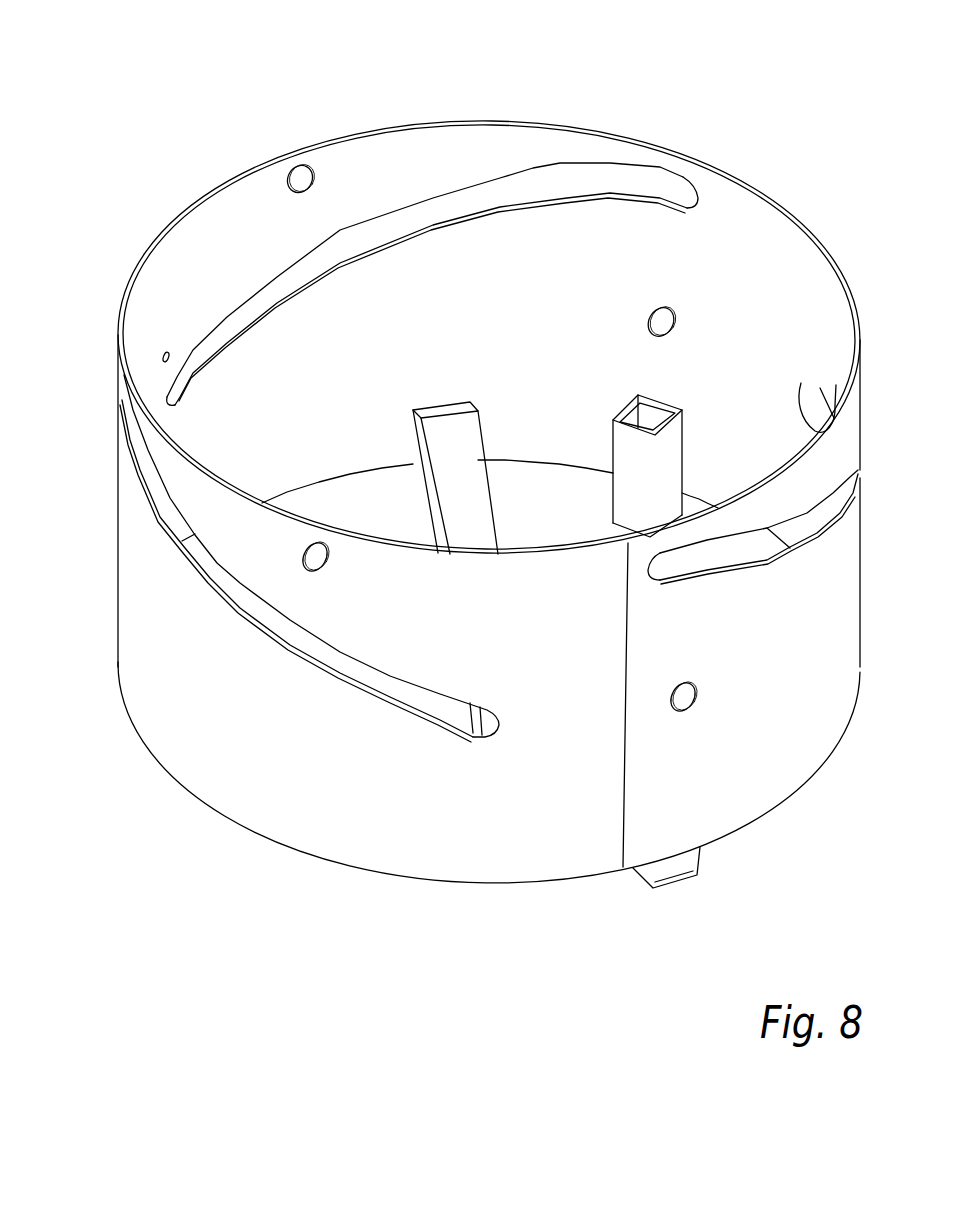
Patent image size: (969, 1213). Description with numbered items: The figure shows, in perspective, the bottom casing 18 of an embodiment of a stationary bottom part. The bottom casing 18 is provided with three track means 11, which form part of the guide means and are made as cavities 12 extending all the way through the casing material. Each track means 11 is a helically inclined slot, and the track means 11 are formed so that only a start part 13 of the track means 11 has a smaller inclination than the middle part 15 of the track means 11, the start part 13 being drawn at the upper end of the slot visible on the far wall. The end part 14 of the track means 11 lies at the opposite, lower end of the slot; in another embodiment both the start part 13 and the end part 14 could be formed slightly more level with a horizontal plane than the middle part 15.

The track means 11 is at (436, 135).
The cavity 12 is at (389, 236).
The start part 13 is at (665, 168).
The end part 14 is at (175, 375).
The middle part 15 is at (277, 277).
The bottom casing 18 is at (740, 300).